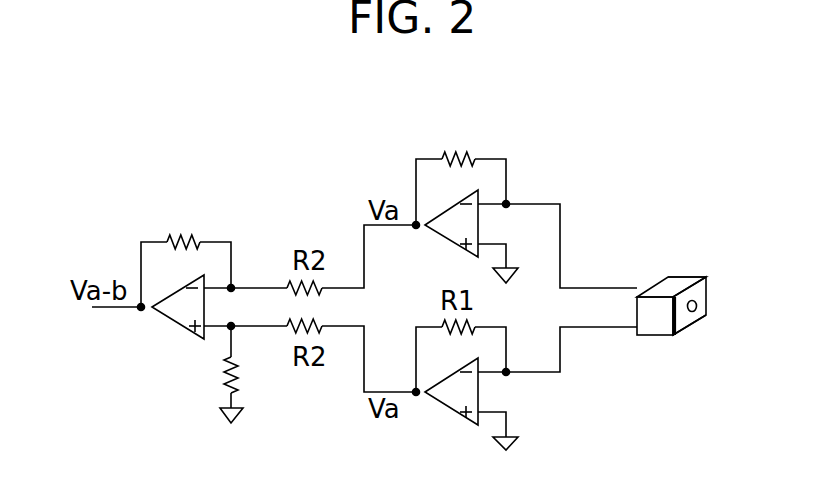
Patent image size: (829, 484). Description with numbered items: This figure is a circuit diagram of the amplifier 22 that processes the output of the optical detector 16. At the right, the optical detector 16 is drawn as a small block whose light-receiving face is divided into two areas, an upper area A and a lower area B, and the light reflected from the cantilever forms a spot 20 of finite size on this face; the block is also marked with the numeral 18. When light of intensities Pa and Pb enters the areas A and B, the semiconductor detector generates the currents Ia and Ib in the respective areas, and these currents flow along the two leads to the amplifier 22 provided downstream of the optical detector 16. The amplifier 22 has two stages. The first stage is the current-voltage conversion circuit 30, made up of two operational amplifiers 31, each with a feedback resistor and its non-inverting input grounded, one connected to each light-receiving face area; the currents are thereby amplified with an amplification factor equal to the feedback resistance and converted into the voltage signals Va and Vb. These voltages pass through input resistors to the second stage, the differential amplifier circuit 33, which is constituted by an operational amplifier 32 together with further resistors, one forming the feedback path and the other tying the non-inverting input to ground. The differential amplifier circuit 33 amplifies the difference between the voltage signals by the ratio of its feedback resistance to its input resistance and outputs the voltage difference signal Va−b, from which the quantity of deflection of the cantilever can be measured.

The amplifier 22 is at (572, 148).
The current-voltage conversion circuit 30 is at (507, 112).
The operational amplifier 31 is at (450, 228).
The operational amplifier 32 is at (170, 312).
The differential amplifier circuit 33 is at (222, 178).
The piezoelectric vibrator (sensor element) 18 is at (660, 280).
The optical detector 16 is at (703, 288).
The spot 20 is at (703, 309).
The area A is at (697, 283).
The area B is at (685, 322).